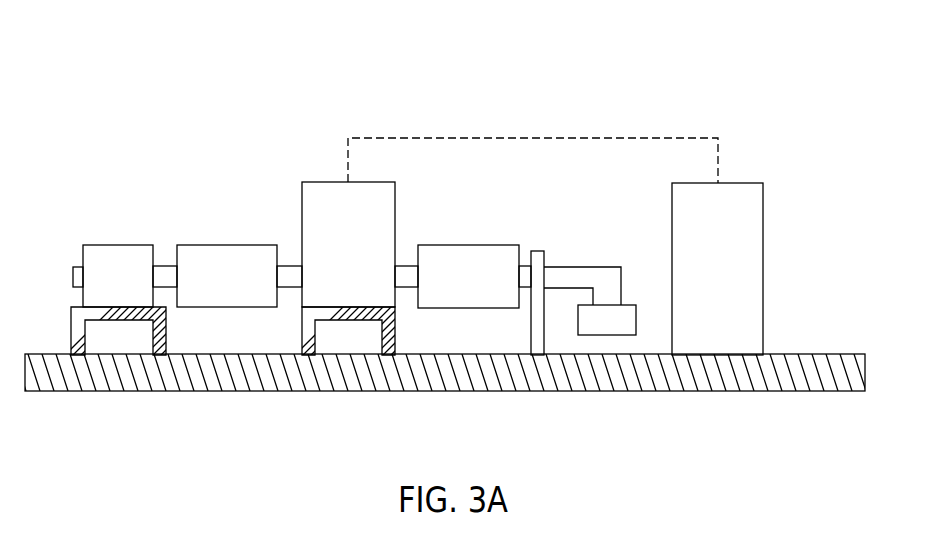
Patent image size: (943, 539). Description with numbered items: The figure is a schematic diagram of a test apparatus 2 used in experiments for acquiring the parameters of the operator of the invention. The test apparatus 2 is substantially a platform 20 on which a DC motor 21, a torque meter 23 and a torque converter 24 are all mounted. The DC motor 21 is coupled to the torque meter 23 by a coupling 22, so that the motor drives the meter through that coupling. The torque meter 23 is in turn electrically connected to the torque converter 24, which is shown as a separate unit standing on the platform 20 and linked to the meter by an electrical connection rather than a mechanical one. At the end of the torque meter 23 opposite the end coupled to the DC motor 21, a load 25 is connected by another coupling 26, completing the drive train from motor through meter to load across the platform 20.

The test apparatus 2 is at (160, 70).
The platform 20 is at (190, 383).
The DC motor 21 is at (119, 272).
The coupling 22 is at (237, 272).
The torque meter 23 is at (330, 212).
The torque converter 24 is at (753, 219).
The load 25 is at (613, 327).
The coupling 26 is at (473, 270).